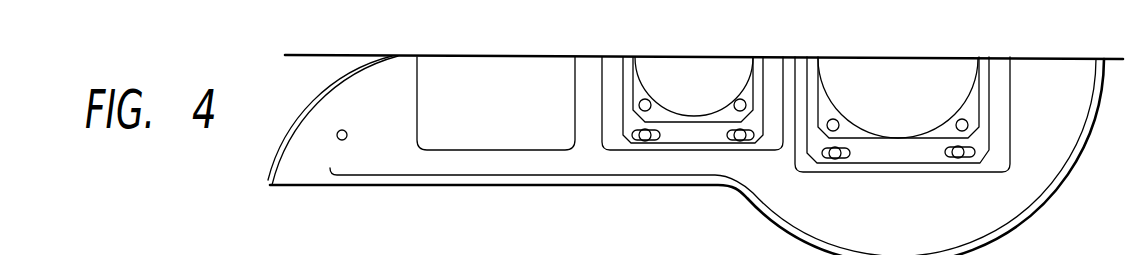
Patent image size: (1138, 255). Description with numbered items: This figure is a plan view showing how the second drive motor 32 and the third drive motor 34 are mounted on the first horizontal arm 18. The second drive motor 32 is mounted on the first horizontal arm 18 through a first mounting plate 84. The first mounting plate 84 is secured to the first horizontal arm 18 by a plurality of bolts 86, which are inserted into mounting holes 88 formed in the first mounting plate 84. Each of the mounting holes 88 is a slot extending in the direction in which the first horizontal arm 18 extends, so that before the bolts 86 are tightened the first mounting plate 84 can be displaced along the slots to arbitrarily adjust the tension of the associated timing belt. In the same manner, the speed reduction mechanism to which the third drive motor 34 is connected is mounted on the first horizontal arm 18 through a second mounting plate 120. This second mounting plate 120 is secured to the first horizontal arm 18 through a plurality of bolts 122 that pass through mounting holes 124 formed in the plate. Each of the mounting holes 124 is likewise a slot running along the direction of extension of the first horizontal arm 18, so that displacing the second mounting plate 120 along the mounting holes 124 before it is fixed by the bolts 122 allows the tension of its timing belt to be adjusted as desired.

The first horizontal arm 18 is at (1045, 72).
The second drive motor 32 is at (905, 77).
The third drive motor 34 is at (687, 70).
The first mounting plate 84 is at (913, 153).
The bolts 86 is at (840, 158).
The mounting holes 88 is at (980, 150).
The second mounting plate 120 is at (690, 133).
The bolts 122 is at (645, 141).
The mounting holes 124 is at (635, 136).